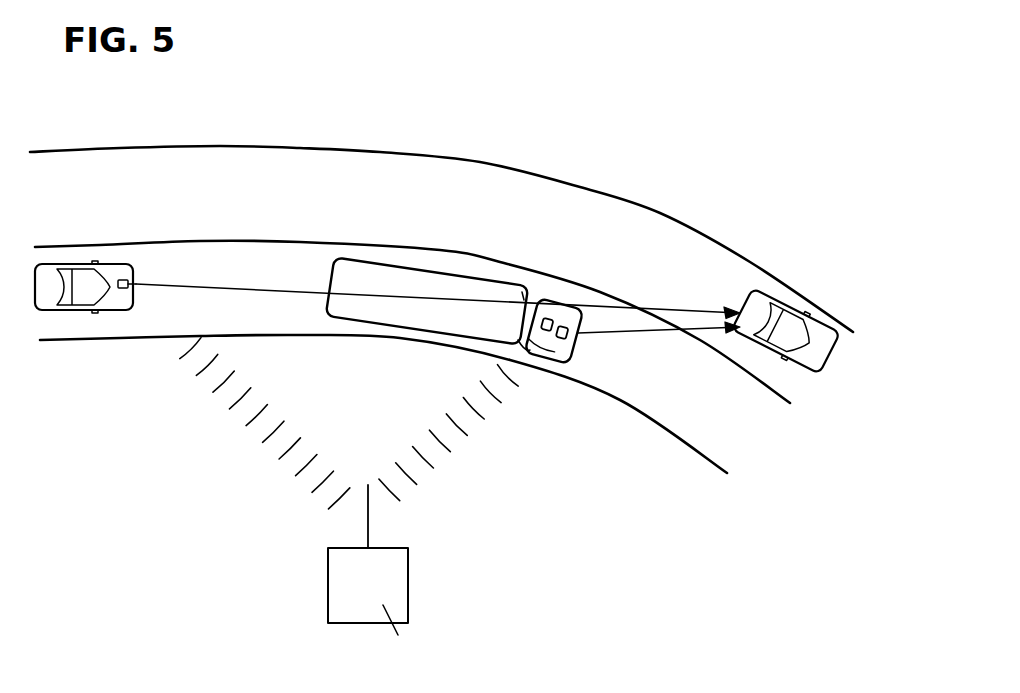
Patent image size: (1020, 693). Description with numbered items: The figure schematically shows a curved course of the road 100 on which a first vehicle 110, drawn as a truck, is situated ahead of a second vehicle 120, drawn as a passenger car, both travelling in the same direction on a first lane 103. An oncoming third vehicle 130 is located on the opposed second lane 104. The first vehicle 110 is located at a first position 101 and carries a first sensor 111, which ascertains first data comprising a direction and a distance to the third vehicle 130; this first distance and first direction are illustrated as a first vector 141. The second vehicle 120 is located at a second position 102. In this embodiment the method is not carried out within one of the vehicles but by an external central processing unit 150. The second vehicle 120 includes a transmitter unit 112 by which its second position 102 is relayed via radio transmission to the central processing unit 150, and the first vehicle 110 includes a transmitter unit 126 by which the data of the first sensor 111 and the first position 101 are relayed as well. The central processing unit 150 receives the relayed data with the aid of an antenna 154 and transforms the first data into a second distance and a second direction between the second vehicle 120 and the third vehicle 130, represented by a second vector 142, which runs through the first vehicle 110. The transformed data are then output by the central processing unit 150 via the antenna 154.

The course of the road 100 is at (465, 123).
The first position 101 is at (342, 310).
The second position 102 is at (128, 307).
The first lane 103 is at (718, 442).
The second lane 104 is at (657, 234).
The first vehicle 110 is at (415, 320).
The first sensor 111 is at (550, 348).
The transmitter unit 112 is at (126, 282).
The second vehicle 120 is at (72, 294).
The transmitter unit 126 is at (547, 318).
The third vehicle 130 is at (803, 327).
The first vector 141 is at (643, 331).
The second vector 142 is at (226, 288).
The central processing unit 150 is at (328, 583).
The antenna 154 is at (368, 515).